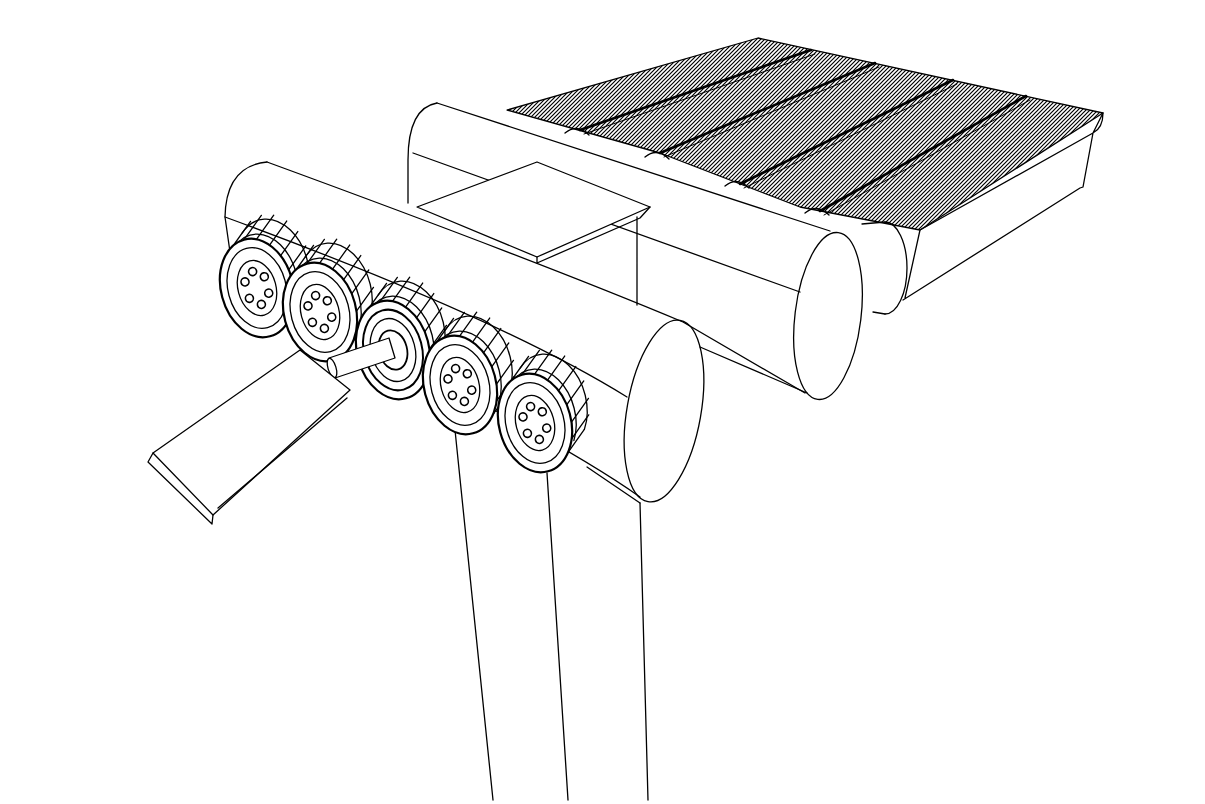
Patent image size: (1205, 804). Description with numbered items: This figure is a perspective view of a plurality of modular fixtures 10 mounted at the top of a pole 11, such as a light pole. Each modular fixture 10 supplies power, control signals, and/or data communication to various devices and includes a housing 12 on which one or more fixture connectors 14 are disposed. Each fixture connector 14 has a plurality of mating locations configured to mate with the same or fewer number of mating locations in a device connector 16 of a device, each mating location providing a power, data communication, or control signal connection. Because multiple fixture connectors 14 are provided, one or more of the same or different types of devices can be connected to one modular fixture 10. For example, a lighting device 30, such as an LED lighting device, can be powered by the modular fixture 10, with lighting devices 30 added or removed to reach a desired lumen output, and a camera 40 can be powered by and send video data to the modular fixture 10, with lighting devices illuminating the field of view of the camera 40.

The modular fixture 10 is at (415, 97).
The pole 11 is at (647, 677).
The housing 12 is at (847, 351).
The fixture connector 14 is at (443, 420).
The device connector 16 is at (386, 394).
The lighting device 30 is at (1033, 217).
The camera 40 is at (213, 412).